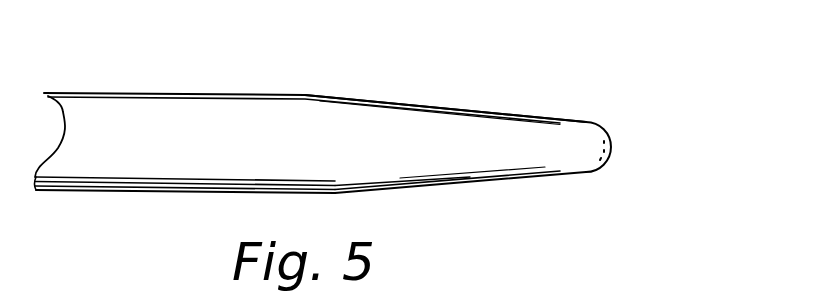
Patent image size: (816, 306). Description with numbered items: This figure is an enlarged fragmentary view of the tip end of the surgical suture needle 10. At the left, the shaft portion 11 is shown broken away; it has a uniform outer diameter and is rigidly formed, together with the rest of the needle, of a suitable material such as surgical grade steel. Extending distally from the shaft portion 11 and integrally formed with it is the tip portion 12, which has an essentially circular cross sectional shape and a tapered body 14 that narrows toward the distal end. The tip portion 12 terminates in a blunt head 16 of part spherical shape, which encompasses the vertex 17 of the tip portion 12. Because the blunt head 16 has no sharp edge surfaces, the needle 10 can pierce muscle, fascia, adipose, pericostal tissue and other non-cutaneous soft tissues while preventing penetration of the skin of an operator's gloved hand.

The surgical suture needle 10 is at (116, 64).
The shaft portion 11 is at (95, 165).
The tip portion 12 is at (360, 140).
The tapered body 14 is at (480, 110).
The blunt head 16 is at (573, 155).
The vertex 17 is at (611, 147).